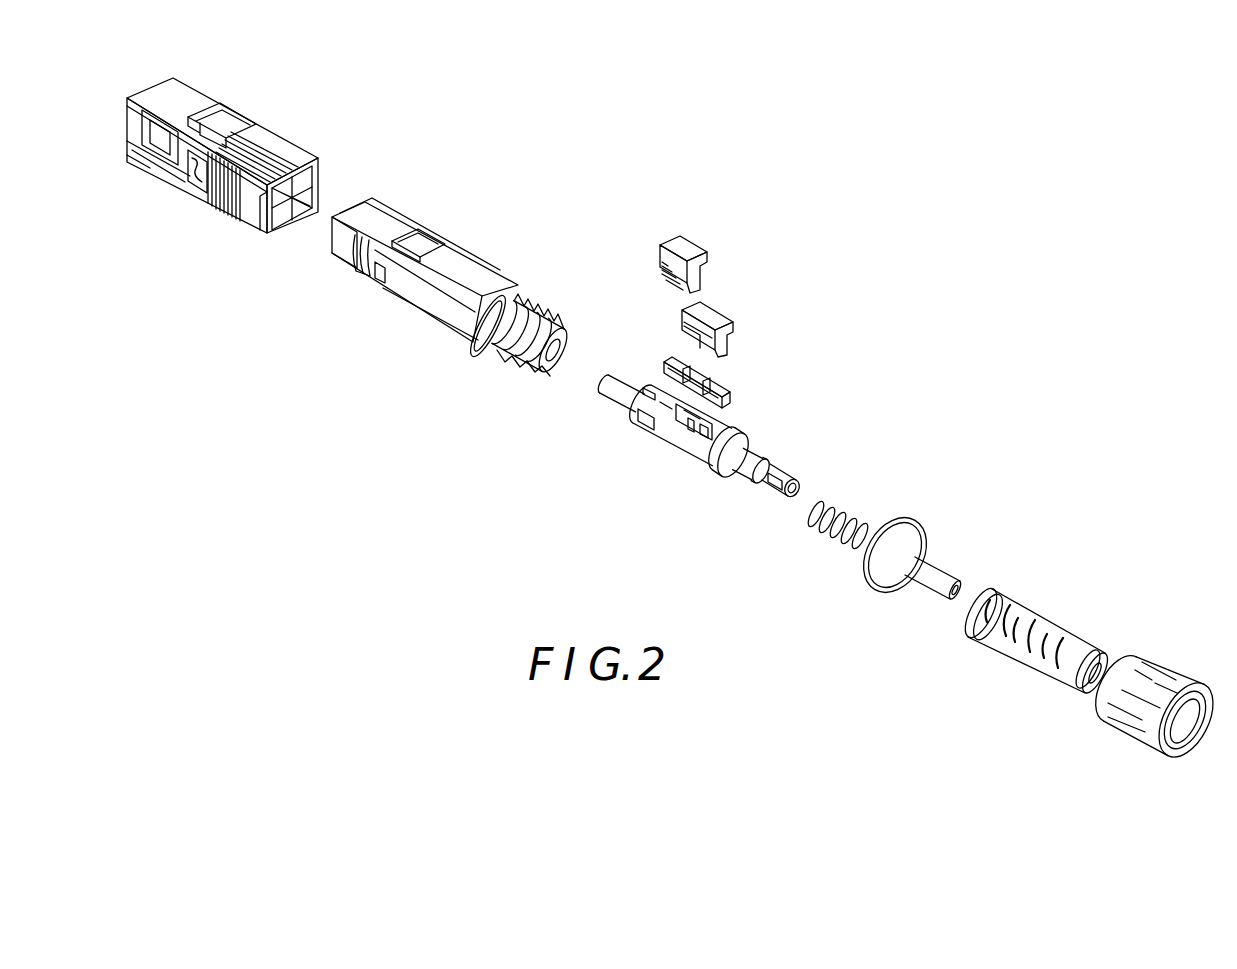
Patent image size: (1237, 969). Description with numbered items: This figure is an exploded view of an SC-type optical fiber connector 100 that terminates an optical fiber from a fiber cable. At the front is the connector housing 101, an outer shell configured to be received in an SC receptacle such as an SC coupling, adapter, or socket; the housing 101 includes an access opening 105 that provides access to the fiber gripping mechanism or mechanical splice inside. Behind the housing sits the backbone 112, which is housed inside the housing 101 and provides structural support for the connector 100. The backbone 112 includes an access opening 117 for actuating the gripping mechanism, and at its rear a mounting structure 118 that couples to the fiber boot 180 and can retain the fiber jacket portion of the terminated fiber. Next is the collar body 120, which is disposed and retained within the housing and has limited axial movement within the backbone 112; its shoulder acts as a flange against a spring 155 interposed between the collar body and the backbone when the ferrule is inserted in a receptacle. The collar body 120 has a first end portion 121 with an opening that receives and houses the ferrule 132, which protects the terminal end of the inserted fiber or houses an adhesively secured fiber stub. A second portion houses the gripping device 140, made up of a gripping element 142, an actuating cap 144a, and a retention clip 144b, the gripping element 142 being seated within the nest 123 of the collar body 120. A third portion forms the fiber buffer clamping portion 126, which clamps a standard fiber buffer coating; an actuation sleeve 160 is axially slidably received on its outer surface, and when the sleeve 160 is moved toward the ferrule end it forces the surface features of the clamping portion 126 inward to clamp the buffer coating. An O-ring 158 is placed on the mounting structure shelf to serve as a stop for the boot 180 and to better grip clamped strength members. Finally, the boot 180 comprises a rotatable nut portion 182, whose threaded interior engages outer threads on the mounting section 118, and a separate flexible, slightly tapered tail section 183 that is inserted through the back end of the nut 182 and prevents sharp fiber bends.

The optical fiber connector 100 is at (971, 317).
The connector housing 101 is at (203, 90).
The access opening 105 is at (210, 127).
The backbone 112 is at (378, 208).
The access opening 117 is at (427, 247).
The mounting structure 118 is at (550, 310).
The collar body 120 is at (684, 452).
The first end portion 121 is at (650, 387).
The nest 123 is at (677, 417).
The fiber buffer clamping portion 126 is at (787, 473).
The ferrule 132 is at (607, 387).
The gripping device 140 is at (780, 205).
The gripping element 142 is at (720, 380).
The actuating cap 144a is at (690, 243).
The retention clip 144b is at (715, 308).
The spring 155 is at (850, 515).
The O-ring 158 is at (912, 513).
The actuation sleeve 160 is at (923, 595).
The fiber boot 180 is at (1223, 677).
The nut portion 182 is at (1128, 737).
The tail section 183 is at (1015, 657).